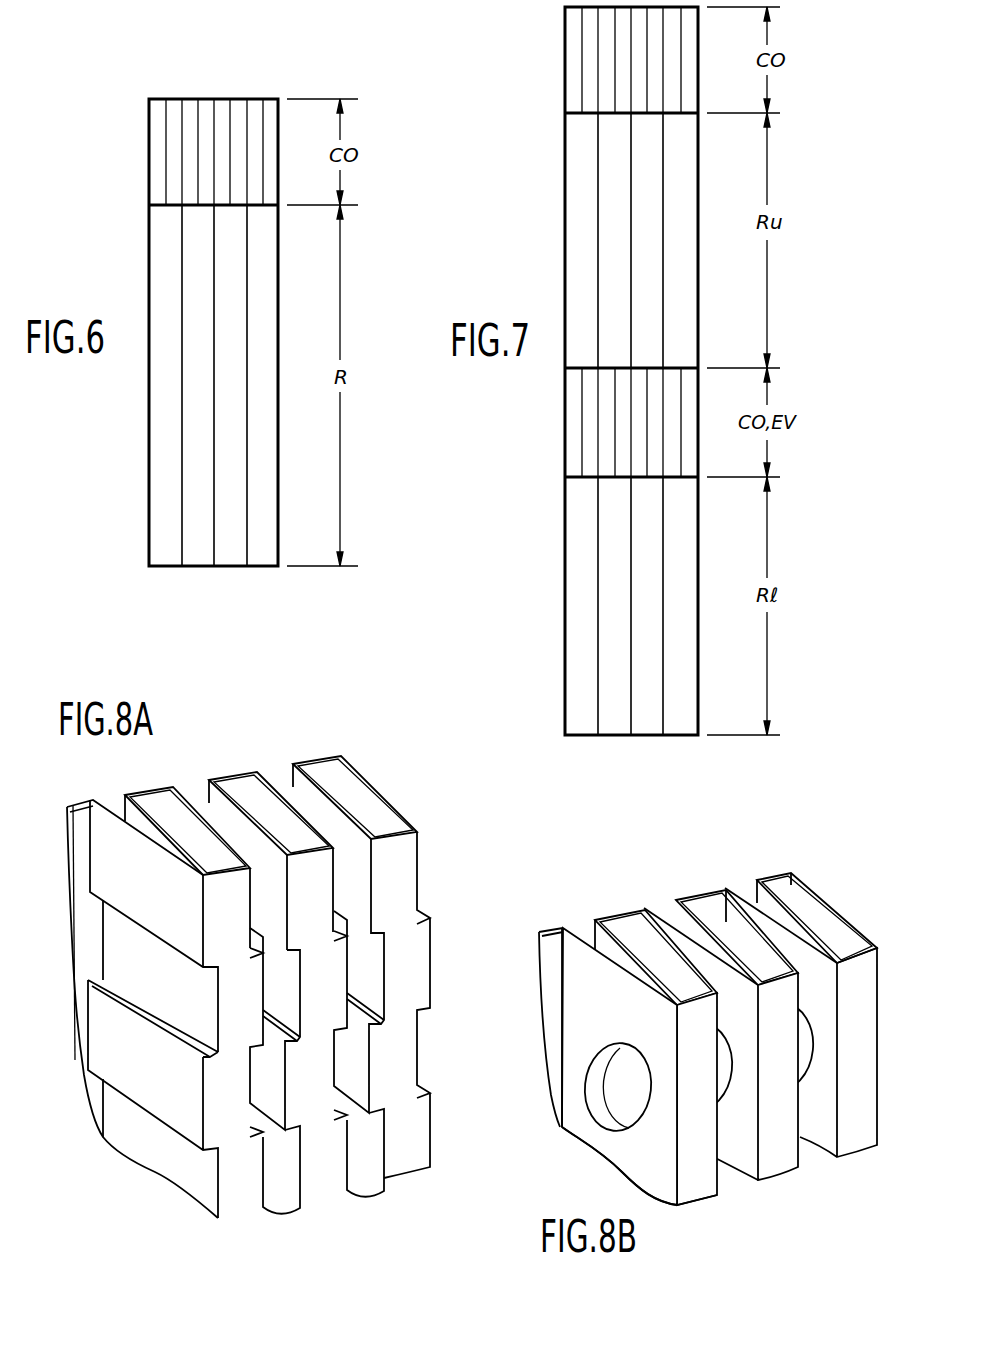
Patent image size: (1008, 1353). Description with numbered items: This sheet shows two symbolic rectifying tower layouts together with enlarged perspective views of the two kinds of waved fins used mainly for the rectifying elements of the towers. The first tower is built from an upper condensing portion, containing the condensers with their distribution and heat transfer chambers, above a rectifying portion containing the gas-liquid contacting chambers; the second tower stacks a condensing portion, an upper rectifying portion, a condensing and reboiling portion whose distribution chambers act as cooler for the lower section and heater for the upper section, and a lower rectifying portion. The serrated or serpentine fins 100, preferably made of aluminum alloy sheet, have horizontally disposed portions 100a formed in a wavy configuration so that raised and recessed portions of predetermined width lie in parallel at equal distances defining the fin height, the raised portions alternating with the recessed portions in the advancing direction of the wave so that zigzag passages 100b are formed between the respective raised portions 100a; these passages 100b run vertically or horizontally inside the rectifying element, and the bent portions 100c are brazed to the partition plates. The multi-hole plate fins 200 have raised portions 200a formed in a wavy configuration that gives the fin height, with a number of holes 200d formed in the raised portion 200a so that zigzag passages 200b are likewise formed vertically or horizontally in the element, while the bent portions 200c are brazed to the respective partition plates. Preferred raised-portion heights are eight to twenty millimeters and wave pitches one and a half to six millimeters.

In FIG. 8A, the serrated or serpentine fins 100 is at (88, 866).
In FIG. 8A, the horizontally disposed portions 100a is at (108, 1022).
In FIG. 8A, the zigzag passages 100b is at (160, 827).
In FIG. 8A, the bent portions 100c is at (405, 858).
In FIG. 8B, the multi-hole plate fins 200 is at (553, 1008).
In FIG. 8B, the raised portions 200a is at (578, 1117).
In FIG. 8B, the zigzag passages 200b is at (613, 947).
In FIG. 8B, the bent portions 200c is at (866, 970).
In FIG. 8B, the holes 200d is at (617, 1043).